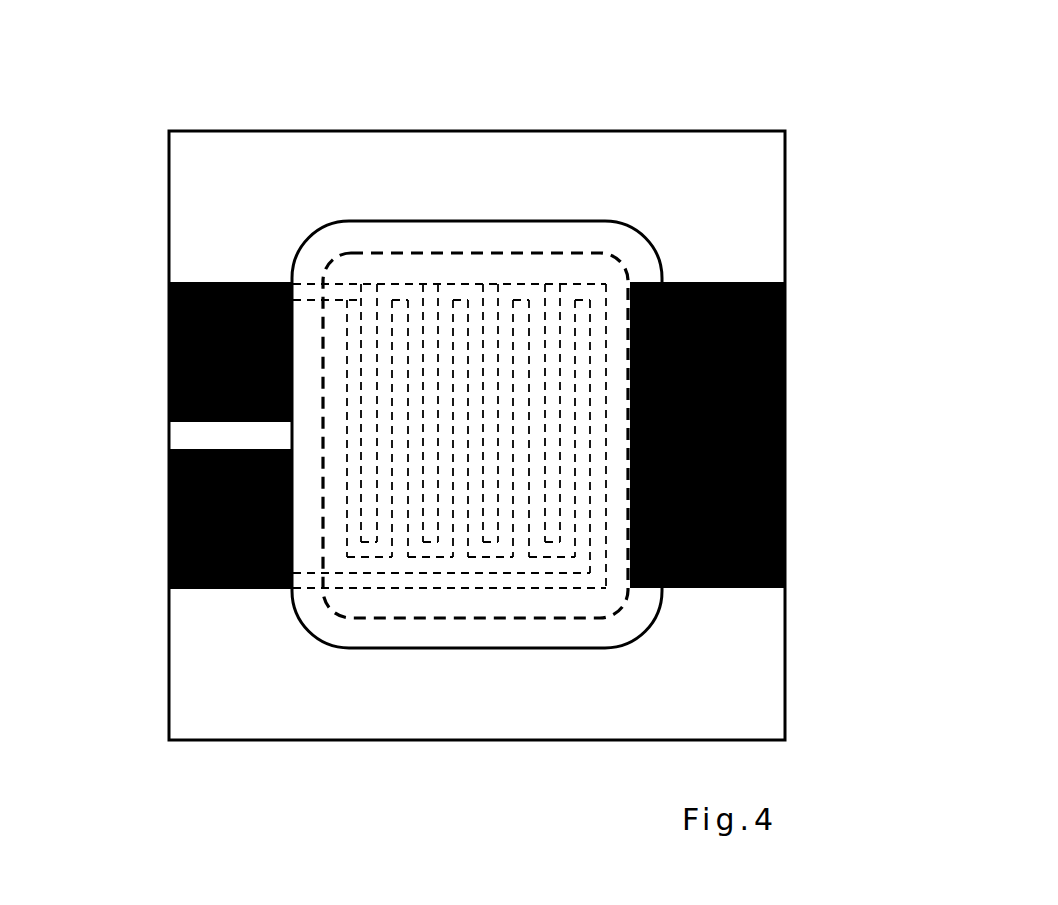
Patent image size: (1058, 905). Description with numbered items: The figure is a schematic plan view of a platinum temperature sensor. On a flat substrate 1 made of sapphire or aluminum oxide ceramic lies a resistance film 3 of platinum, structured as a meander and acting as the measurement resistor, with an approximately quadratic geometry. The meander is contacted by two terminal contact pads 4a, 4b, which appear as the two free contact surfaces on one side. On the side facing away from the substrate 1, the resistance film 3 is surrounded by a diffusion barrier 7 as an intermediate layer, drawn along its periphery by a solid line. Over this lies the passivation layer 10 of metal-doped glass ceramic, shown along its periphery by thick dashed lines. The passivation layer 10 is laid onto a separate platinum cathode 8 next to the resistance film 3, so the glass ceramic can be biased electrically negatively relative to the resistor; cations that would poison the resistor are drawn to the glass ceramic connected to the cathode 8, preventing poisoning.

The substrate 1 is at (609, 155).
The resistance film 3 is at (518, 283).
The terminal contact pad 4a is at (168, 352).
The terminal contact pad 4b is at (168, 529).
The diffusion barrier 7 is at (330, 222).
The platinum cathode 8 is at (785, 440).
The passivation layer 10 is at (405, 253).